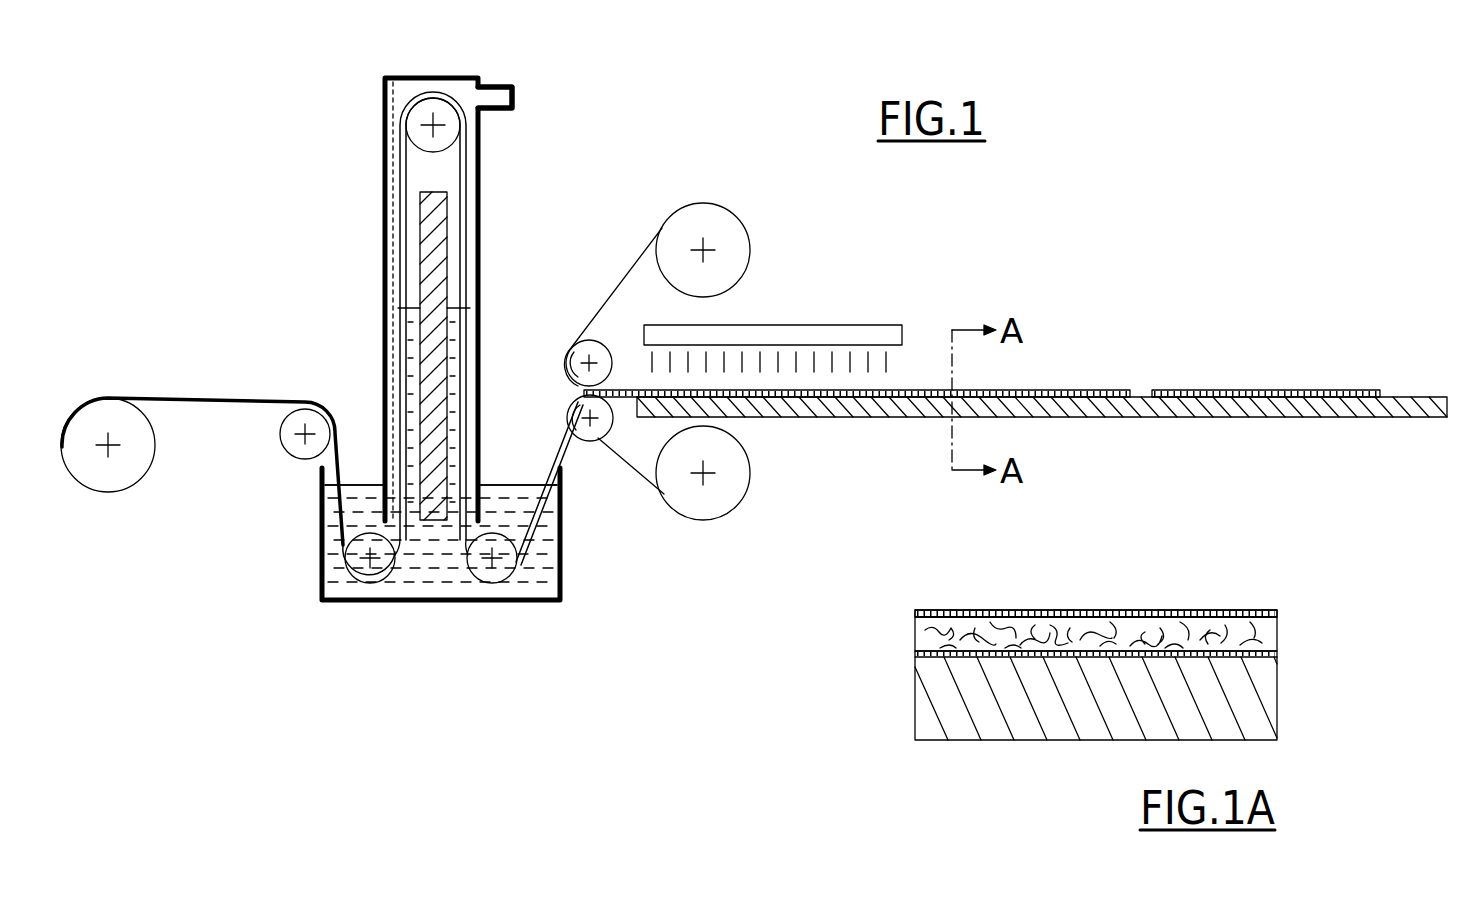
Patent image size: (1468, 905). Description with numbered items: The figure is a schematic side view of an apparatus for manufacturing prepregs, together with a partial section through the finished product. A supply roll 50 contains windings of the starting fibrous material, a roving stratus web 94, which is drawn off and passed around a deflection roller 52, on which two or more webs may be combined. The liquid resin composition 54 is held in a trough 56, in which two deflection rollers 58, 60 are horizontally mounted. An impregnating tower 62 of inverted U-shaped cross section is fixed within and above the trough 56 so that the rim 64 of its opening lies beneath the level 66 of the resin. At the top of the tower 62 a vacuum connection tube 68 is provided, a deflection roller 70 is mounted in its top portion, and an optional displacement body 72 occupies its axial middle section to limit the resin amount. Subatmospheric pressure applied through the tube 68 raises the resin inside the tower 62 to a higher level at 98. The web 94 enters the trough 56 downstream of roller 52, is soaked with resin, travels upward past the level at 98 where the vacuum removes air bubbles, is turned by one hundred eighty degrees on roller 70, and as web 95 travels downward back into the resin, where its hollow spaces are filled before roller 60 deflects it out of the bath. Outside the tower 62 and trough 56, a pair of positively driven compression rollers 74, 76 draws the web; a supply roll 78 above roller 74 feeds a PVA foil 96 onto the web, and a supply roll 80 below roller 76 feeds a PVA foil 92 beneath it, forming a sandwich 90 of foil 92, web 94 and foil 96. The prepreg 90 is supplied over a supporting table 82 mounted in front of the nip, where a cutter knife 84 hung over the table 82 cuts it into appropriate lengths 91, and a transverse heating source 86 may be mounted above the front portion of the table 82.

In FIG. 1, the supply roll 50 is at (122, 490).
In FIG. 1, the deflection roller 52 is at (300, 422).
In FIG. 1, the liquid resin composition 54 is at (418, 583).
In FIG. 1, the trough 56 is at (562, 560).
In FIG. 1, the deflection roller 58 is at (367, 590).
In FIG. 1, the deflection roller 60 is at (490, 590).
In FIG. 1, the impregnating tower 62 is at (383, 260).
In FIG. 1, the rim 64 is at (340, 528).
In FIG. 1, the level 66 is at (488, 470).
In FIG. 1, the vacuum connection tube 68 is at (498, 87).
In FIG. 1, the deflection roller 70 is at (410, 118).
In FIG. 1, the displacement body 72 is at (426, 213).
In FIG. 1, the compression roller 74 is at (592, 345).
In FIG. 1, the compression roller 76 is at (590, 445).
In FIG. 1, the supply roll 78 is at (718, 238).
In FIG. 1, the supply roll 80 is at (712, 500).
In FIG. 1, the supporting table 82 is at (870, 419).
In FIG. 1A, the supporting table 82 is at (945, 702).
In FIG. 1, the cutter knife 84 is at (1142, 358).
In FIG. 1, the transverse heating source 86 is at (836, 325).
In FIG. 1, the sandwich 90 is at (1094, 379).
In FIG. 1A, the sandwich 90 is at (1218, 604).
In FIG. 1, the lengths 91 is at (1266, 392).
In FIG. 1, the PVA foil 92 is at (632, 480).
In FIG. 1A, the PVA foil 92 is at (1278, 654).
In FIG. 1, the roving stratus web 94 is at (203, 398).
In FIG. 1A, the roving stratus web 94 is at (925, 636).
In FIG. 1, the web 95 is at (400, 158).
In FIG. 1, the PVA foil 96 is at (608, 308).
In FIG. 1A, the PVA foil 96 is at (1005, 610).
In FIG. 1, the resin level 98 is at (456, 305).